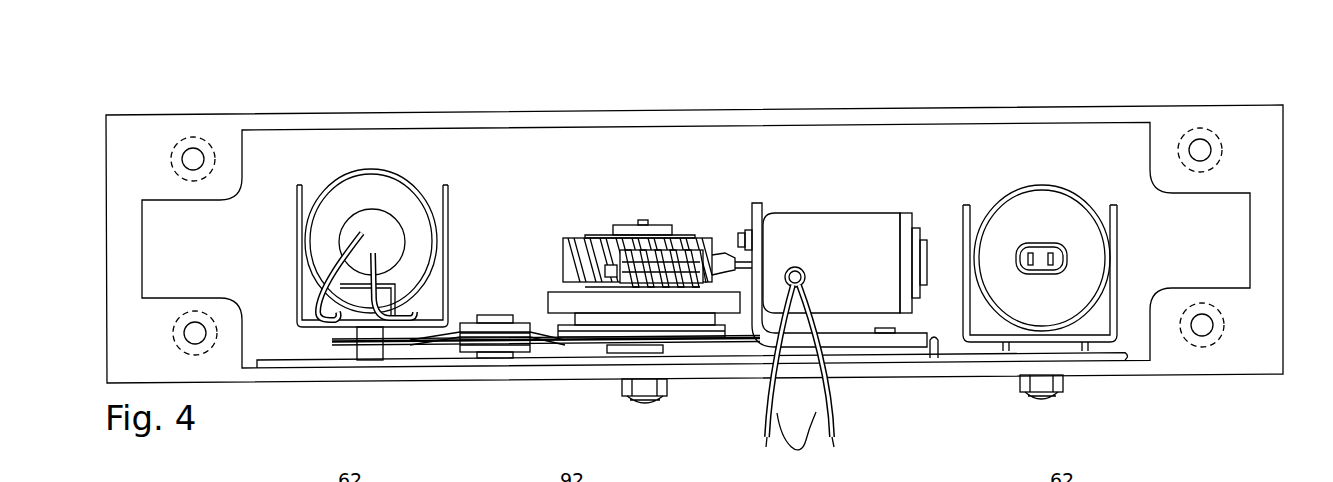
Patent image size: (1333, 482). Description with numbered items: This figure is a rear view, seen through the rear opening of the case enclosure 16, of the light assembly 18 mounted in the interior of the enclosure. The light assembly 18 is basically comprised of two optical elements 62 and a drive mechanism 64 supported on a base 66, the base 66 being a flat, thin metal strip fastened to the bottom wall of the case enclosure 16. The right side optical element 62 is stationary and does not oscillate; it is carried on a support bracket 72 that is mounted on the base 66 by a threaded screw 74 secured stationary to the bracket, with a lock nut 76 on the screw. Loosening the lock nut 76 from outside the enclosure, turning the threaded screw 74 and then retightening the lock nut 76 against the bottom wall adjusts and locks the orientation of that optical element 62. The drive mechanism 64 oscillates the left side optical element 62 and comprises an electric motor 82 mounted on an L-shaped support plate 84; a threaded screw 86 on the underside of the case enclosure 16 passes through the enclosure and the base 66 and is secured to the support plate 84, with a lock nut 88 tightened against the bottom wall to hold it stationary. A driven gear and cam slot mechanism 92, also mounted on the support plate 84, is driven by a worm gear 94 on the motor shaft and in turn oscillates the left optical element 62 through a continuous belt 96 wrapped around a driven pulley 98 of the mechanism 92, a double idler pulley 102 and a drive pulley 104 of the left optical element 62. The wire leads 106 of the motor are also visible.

The case enclosure 16 is at (968, 106).
The light assembly 18 is at (845, 145).
The optical element 62 is at (370, 160).
The drive mechanism 64 is at (690, 152).
The base 66 is at (1125, 358).
The support bracket 72 is at (1117, 262).
The threaded screw 74 is at (1038, 402).
The lock nut 76 is at (1019, 382).
The electric motor 82 is at (793, 225).
The L-shaped support plate 84 is at (934, 360).
The threaded screw 86 is at (640, 405).
The lock nut 88 is at (622, 388).
The driven gear and cam slot mechanism 92 is at (564, 228).
The worm gear 94 is at (641, 245).
The continuous belt 96 is at (445, 342).
The driven pulley 98 is at (562, 343).
The double idler pulley 102 is at (486, 350).
The drive pulley 104 is at (328, 343).
The motor leads 106 is at (800, 448).